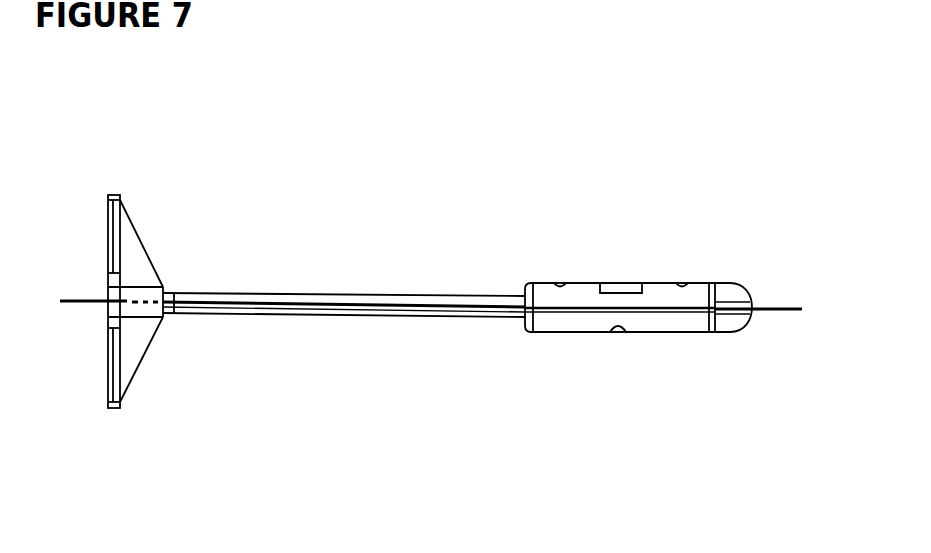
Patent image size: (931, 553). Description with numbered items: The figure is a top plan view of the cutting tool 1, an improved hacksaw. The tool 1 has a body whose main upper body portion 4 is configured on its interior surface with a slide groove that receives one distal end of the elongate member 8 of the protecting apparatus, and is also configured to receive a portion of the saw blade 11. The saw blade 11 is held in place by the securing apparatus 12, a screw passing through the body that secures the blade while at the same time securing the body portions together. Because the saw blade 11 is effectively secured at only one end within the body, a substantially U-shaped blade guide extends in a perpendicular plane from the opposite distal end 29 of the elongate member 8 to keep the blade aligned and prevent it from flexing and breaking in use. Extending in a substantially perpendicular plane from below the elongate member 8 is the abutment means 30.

The tool 1 is at (643, 112).
The main upper body portion 4 is at (660, 283).
The elongate member 8 is at (350, 293).
The saw blade 11 is at (778, 306).
The securing apparatus 12 is at (620, 328).
The opposite distal end 29 is at (108, 236).
The abutment means 30 is at (150, 292).